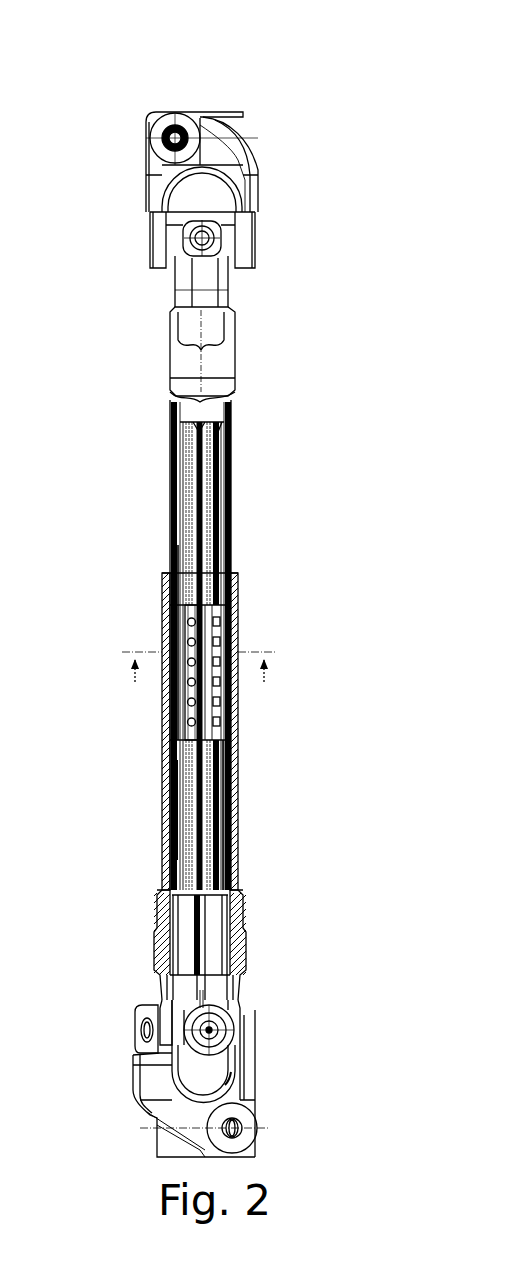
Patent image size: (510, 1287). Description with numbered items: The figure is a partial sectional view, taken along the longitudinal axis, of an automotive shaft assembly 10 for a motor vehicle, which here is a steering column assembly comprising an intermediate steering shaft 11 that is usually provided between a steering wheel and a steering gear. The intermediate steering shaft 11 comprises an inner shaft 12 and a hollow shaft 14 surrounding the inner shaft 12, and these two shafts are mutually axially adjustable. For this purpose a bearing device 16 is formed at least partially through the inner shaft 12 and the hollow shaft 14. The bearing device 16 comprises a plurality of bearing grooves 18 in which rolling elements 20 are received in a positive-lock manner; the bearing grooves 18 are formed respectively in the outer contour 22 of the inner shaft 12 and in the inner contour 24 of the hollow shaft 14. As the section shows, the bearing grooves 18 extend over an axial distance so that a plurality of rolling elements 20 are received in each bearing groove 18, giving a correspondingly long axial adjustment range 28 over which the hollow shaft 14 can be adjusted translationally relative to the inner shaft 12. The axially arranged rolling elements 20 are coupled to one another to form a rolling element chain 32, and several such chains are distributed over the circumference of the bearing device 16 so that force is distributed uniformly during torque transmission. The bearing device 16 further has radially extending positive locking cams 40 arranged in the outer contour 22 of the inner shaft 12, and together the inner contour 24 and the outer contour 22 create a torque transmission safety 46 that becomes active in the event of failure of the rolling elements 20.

The automotive shaft assembly 10 is at (123, 133).
The intermediate steering shaft 11 is at (148, 443).
The inner shaft 12 is at (222, 368).
The hollow shaft 14 is at (233, 850).
The bearing device 16 is at (133, 630).
The bearing grooves 18 is at (178, 605).
The rolling elements 20 is at (220, 627).
The outer contour 22 is at (232, 590).
The inner contour 24 is at (165, 833).
The axial adjustment range 28 is at (130, 652).
The rolling element chain 32 is at (240, 710).
The positive locking cams 40 is at (175, 555).
The torque transmission safety 46 is at (240, 553).